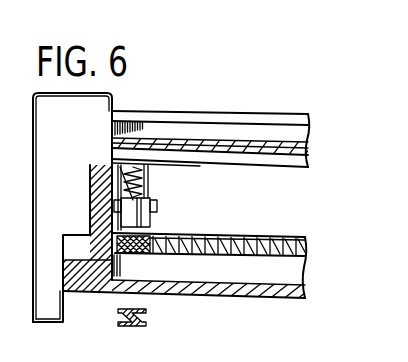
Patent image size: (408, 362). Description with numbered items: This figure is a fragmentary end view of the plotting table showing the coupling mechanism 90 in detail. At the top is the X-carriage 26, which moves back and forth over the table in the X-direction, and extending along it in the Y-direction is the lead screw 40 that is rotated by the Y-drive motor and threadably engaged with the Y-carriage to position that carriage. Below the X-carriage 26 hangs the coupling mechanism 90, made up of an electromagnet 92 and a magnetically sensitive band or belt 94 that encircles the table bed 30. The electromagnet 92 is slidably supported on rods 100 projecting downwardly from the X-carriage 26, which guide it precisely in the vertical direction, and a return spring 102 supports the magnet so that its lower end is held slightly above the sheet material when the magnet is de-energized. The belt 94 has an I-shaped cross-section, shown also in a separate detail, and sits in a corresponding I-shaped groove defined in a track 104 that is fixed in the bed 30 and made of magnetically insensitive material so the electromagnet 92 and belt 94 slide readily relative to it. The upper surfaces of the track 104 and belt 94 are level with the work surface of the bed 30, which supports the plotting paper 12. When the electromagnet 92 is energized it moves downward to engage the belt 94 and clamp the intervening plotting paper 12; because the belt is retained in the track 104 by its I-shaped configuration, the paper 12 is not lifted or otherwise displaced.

The X-carriage 26 is at (192, 114).
The lead screw 40 is at (307, 151).
The coupling mechanism 90 is at (206, 197).
The rods 100 is at (150, 170).
The return spring 102 is at (146, 189).
The electromagnet 92 is at (140, 217).
The plotting paper 12 is at (293, 237).
The table bed 30 is at (308, 248).
The track 104 is at (118, 252).
The belt 94 is at (152, 254).